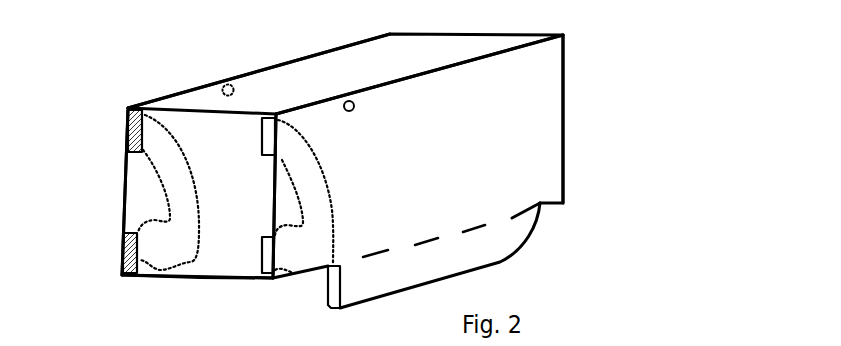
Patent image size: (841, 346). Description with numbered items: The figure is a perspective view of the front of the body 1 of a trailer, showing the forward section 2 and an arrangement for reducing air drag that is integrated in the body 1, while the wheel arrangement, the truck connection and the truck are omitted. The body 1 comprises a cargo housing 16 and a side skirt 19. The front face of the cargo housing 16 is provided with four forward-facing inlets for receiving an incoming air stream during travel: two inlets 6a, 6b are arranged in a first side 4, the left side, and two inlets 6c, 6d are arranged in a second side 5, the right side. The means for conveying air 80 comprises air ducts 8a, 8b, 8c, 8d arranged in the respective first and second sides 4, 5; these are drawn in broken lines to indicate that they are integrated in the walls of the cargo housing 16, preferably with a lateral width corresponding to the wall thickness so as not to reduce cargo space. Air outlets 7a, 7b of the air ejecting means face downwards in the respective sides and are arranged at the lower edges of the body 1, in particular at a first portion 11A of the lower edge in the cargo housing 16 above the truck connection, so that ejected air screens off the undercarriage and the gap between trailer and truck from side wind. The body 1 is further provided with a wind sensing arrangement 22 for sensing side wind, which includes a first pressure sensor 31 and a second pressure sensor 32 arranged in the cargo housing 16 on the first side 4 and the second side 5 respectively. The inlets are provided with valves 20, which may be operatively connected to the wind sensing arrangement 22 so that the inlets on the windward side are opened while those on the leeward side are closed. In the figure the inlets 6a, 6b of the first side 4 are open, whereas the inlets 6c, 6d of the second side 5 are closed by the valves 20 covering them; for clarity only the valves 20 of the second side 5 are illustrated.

The body 1 is at (575, 123).
The forward section 2 is at (199, 78).
The first side 4 is at (409, 266).
The second side 5 is at (261, 58).
The inlet 6a is at (262, 122).
The inlet 6b is at (261, 240).
The inlet 6c is at (127, 126).
The inlet 6d is at (123, 253).
The air outlet 7a is at (323, 278).
The air outlet 7b is at (176, 264).
The air duct 8a is at (317, 185).
The air duct 8b is at (307, 260).
The air duct 8c is at (180, 166).
The air duct 8d is at (176, 255).
The first portion of the lower edge 11A is at (192, 266).
The cargo housing 16 is at (548, 195).
The side skirt 19 is at (501, 250).
The valves 20 is at (123, 231).
The wind sensing arrangement 22 is at (264, 81).
The first pressure sensor 31 is at (354, 110).
The second pressure sensor 32 is at (232, 96).
The means for conveying air 80 is at (300, 213).